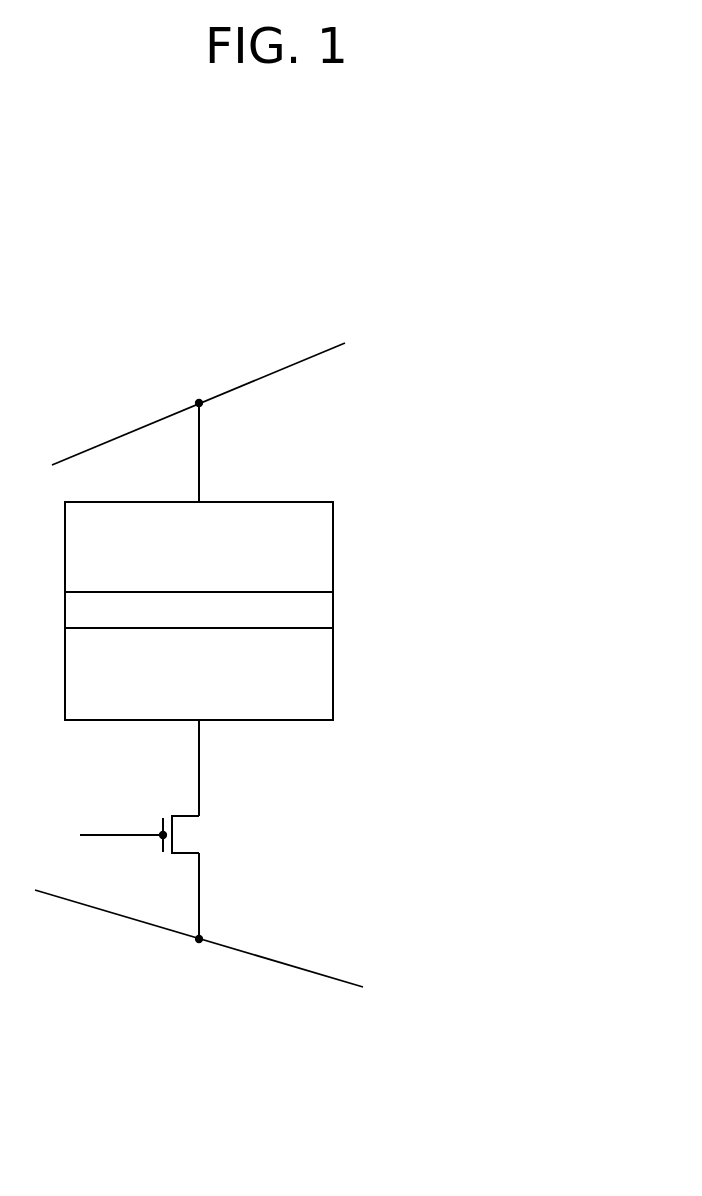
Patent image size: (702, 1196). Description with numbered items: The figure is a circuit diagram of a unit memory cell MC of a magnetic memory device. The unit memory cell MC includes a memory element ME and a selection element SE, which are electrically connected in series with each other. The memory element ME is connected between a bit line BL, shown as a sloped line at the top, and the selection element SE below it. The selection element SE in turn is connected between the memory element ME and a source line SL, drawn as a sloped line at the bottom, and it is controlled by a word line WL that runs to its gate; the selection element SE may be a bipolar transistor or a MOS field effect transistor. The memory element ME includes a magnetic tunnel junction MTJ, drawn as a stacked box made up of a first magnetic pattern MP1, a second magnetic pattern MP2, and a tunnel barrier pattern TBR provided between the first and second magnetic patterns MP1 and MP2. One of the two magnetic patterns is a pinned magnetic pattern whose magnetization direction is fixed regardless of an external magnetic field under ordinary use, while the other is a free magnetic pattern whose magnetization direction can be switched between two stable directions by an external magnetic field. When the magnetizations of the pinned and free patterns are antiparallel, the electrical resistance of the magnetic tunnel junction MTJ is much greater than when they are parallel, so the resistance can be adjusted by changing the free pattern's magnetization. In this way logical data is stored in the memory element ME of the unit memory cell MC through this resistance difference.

The unit memory cell MC is at (470, 292).
The bit line BL is at (277, 372).
The source line SL is at (280, 963).
The word line WL is at (106, 836).
The selection element SE is at (182, 834).
The memory element ME is at (324, 611).
The magnetic tunnel junction MTJ is at (277, 611).
The first magnetic pattern MP1 is at (242, 674).
The second magnetic pattern MP2 is at (322, 546).
The tunnel barrier pattern TBR is at (322, 610).